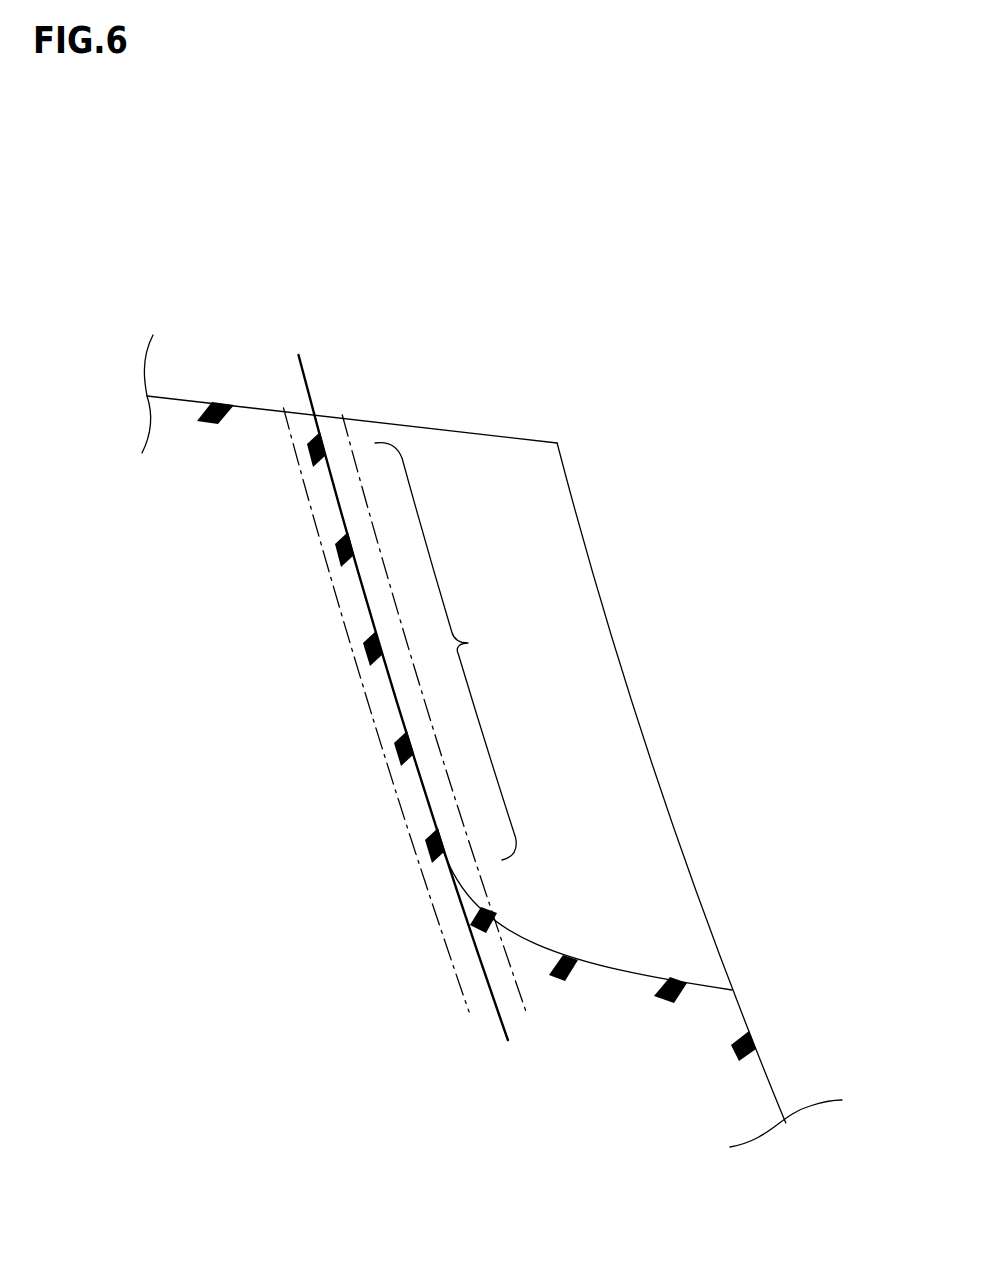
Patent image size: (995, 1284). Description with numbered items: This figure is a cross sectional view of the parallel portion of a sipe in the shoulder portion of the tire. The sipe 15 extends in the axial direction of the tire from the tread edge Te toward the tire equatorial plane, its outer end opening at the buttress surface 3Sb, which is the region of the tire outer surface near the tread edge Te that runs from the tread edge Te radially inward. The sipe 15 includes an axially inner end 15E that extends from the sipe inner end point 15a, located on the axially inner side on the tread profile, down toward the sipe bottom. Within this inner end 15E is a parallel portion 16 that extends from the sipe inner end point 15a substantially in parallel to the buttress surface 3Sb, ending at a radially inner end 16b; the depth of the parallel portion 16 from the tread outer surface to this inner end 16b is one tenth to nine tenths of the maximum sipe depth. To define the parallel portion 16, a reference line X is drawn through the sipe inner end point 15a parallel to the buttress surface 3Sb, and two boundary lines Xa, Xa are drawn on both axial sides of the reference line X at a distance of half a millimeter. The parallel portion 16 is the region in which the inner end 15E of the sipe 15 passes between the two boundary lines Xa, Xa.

The sipe 15 is at (552, 568).
The sipe inner end point 15a is at (315, 407).
The axially inner end of the sipe 15E is at (340, 517).
The tread edge Te is at (557, 443).
The buttress surface 3Sb is at (625, 673).
The boundary line Xa is at (380, 543).
The parallel portion 16 is at (445, 651).
The radially inner end of the parallel portion 16b is at (500, 910).
The reference line X is at (498, 1013).